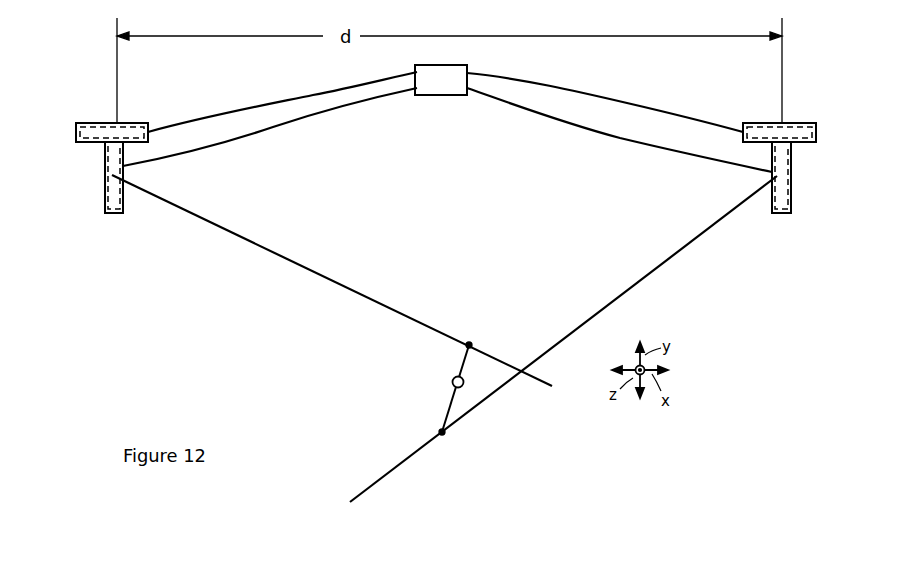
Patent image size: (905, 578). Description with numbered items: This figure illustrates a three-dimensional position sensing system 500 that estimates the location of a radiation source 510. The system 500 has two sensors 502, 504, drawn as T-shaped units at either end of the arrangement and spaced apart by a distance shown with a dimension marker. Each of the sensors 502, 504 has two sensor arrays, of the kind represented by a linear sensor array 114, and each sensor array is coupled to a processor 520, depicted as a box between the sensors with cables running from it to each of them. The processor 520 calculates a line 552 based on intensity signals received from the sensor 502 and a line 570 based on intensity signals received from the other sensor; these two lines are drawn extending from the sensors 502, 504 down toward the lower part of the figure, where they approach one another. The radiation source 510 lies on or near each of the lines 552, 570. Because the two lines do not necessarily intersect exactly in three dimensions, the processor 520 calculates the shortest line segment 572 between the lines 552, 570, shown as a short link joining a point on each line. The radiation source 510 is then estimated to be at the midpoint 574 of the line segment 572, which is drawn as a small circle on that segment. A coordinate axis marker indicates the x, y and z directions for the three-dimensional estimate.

The linear sensor array 114 is at (95, 130).
The three-dimensional position sensing system 500 is at (140, 243).
The sensor 502 is at (791, 162).
The sensor 504 is at (91, 142).
The radiation source 510 is at (392, 372).
The processor 520 is at (458, 91).
The line 552 is at (690, 245).
The line 570 is at (263, 249).
The shortest line segment 572 is at (396, 390).
The midpoint 574 is at (452, 380).